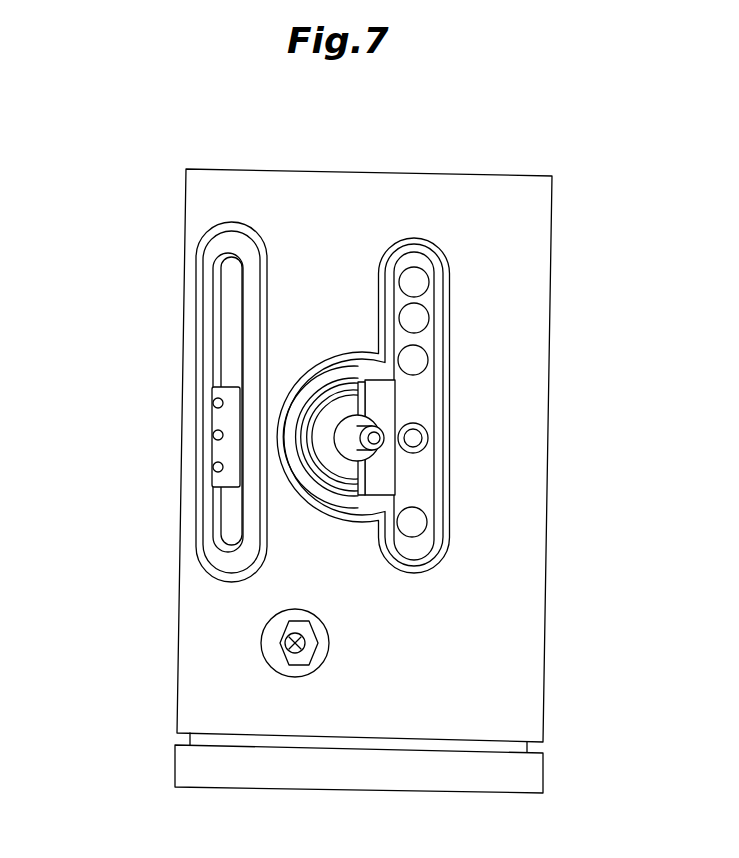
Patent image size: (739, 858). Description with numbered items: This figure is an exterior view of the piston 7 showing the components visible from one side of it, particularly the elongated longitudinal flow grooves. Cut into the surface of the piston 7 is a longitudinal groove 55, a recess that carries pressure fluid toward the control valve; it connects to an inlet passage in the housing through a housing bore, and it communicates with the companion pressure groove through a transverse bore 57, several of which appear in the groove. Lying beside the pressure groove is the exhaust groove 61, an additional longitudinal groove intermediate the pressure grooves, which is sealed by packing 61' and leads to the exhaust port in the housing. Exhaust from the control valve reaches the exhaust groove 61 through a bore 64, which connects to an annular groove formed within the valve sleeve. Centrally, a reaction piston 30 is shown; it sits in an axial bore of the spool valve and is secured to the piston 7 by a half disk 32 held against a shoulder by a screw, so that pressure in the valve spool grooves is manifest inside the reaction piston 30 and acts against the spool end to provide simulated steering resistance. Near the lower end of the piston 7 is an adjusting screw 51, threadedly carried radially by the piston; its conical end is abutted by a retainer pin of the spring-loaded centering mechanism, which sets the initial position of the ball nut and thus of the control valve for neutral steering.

The piston 7 is at (253, 203).
The exhaust groove 61 is at (160, 402).
The packing 61' is at (172, 402).
The bore 64 is at (216, 435).
The longitudinal groove 55 is at (418, 392).
The transverse bore 57 is at (418, 319).
The half disk 32 is at (377, 473).
The reaction piston 30 is at (374, 438).
The adjusting screw 51 is at (285, 638).